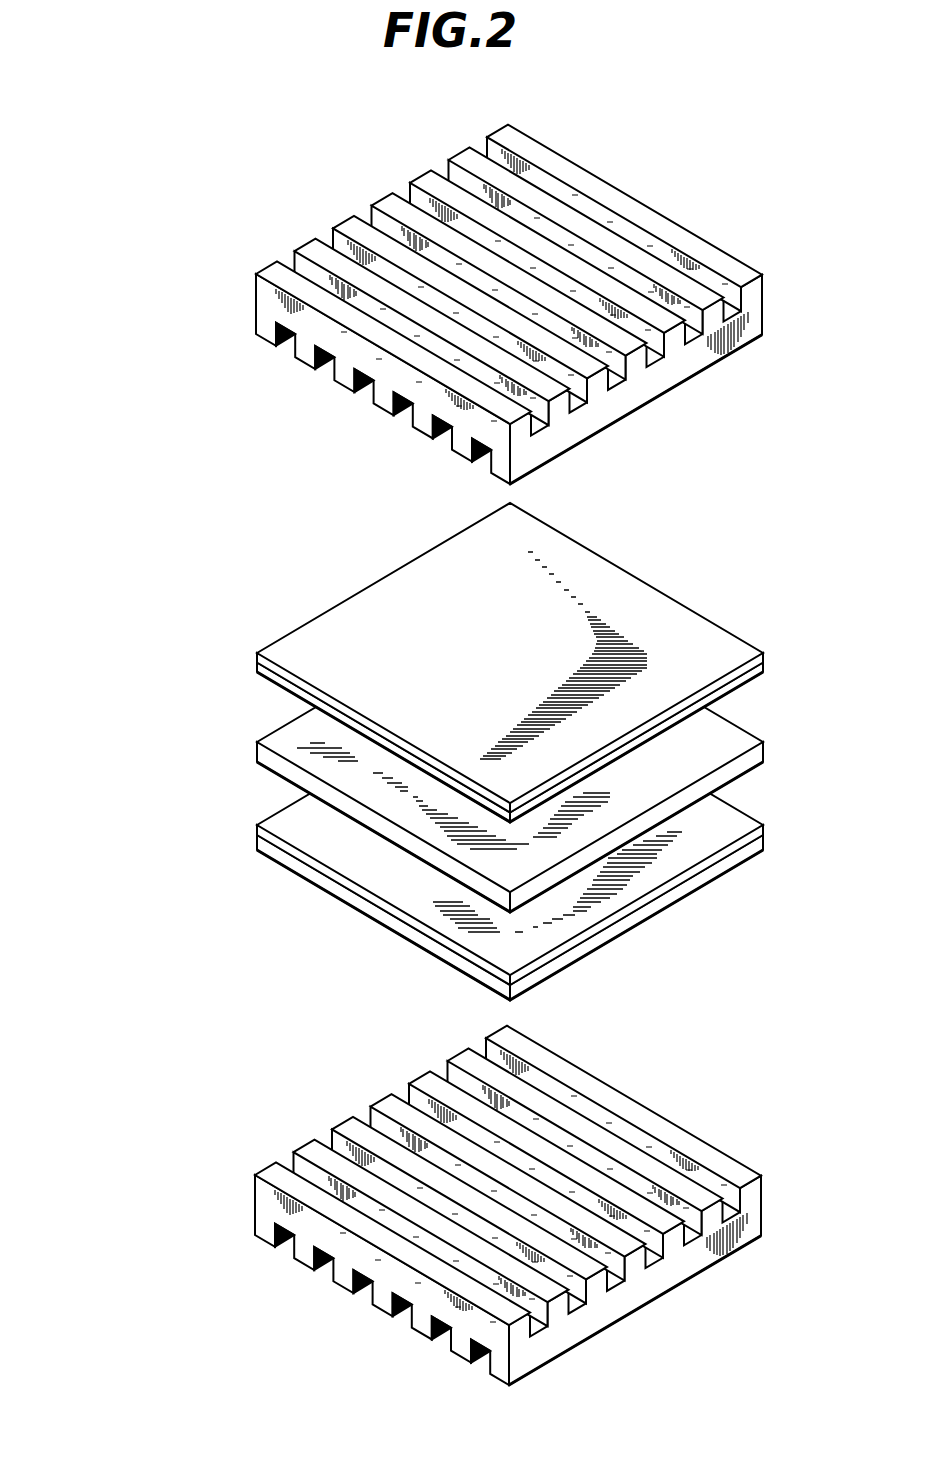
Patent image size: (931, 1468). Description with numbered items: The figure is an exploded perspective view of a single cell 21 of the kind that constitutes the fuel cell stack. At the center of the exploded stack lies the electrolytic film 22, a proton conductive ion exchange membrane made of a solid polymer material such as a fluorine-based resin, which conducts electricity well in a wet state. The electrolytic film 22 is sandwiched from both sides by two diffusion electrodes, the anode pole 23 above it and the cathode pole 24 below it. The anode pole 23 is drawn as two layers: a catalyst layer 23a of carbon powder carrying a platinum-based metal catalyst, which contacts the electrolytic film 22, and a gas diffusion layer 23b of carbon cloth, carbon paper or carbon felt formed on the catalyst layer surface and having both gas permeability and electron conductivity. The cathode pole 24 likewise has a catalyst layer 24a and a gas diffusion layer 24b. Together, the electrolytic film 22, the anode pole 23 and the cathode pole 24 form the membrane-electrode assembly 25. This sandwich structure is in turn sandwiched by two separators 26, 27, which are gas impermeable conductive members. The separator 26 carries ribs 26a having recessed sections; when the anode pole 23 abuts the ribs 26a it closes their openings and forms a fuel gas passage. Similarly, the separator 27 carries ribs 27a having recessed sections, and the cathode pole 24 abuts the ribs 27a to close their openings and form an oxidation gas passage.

The cell 21 is at (101, 252).
The electrolytic film 22 is at (257, 753).
The anode pole 23 is at (162, 625).
The catalyst layer 23a is at (257, 670).
The gas diffusion layer 23b is at (257, 658).
The cathode pole 24 is at (162, 805).
The catalyst layer 24a is at (257, 830).
The gas diffusion layer 24b is at (257, 844).
The membrane-electrode assembly 25 is at (118, 643).
The separator 26 is at (255, 300).
The ribs 26a is at (327, 366).
The separator 27 is at (765, 1218).
The ribs 27a is at (712, 1212).